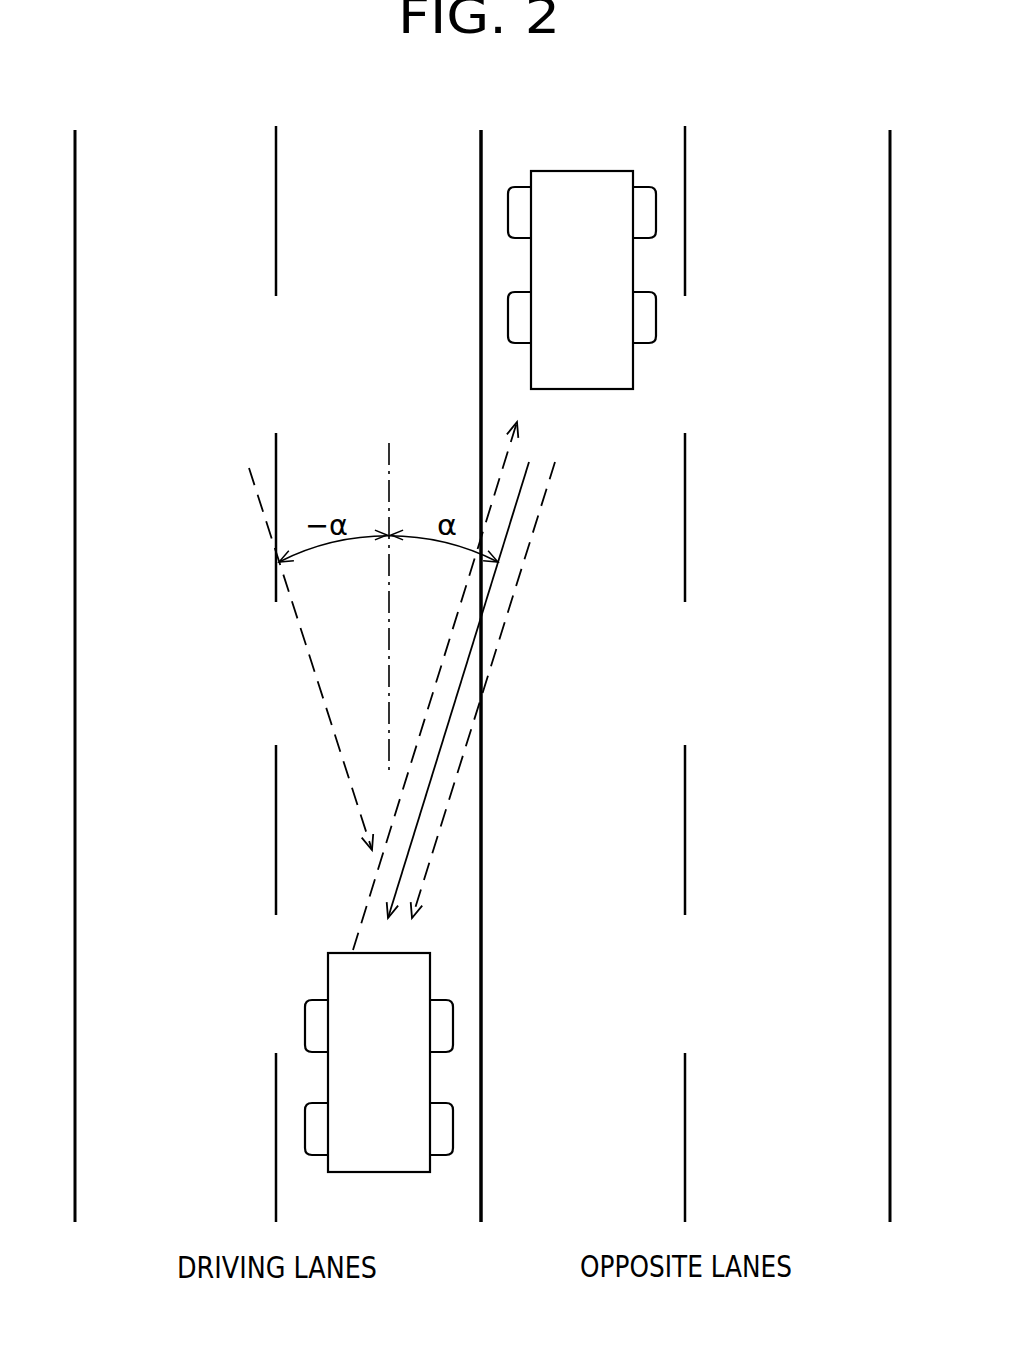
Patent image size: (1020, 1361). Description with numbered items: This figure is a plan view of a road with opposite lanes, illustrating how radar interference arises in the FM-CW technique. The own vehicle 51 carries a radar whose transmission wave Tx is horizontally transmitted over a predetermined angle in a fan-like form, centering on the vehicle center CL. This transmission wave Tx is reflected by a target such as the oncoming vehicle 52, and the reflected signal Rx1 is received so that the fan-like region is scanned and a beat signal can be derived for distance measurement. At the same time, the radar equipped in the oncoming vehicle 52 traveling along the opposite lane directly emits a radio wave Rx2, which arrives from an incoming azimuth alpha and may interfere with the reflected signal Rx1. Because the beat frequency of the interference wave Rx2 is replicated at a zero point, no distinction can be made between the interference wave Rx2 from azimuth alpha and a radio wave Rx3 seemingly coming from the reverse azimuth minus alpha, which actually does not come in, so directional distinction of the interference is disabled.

The vehicle 51 is at (432, 1072).
The oncoming vehicle 52 is at (633, 259).
The transmission wave Tx is at (437, 682).
The reflected signal Rx1 is at (446, 813).
The radio wave Rx2 is at (493, 580).
The radio wave Rx3 is at (260, 499).
The vehicle center CL is at (390, 478).